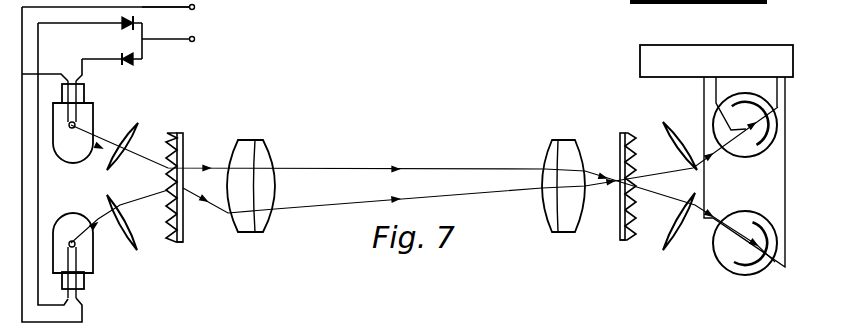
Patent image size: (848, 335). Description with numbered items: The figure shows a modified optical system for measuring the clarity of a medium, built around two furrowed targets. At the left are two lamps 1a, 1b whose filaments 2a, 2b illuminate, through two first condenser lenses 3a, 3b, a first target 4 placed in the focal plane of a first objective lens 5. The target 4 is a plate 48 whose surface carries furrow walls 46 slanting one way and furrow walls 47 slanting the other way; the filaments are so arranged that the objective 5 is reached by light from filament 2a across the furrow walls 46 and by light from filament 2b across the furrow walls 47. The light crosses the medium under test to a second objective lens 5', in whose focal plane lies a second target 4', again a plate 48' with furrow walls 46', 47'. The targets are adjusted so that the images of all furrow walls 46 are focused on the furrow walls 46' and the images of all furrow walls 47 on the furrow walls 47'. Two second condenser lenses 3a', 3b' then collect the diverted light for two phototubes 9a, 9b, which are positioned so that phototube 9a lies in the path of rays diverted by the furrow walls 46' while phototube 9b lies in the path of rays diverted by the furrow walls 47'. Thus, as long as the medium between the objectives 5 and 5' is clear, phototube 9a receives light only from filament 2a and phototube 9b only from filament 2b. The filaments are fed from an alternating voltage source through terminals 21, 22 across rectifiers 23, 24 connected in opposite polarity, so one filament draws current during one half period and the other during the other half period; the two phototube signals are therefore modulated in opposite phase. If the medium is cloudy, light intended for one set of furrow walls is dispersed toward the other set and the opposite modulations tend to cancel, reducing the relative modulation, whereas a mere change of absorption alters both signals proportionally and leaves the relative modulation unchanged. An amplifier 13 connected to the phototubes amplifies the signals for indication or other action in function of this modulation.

The lamp 1a is at (86, 122).
The filament 2a is at (78, 123).
The first condenser lens 3a is at (135, 141).
The lamp 1b is at (86, 255).
The filament 2b is at (78, 246).
The first condenser lens 3b is at (118, 225).
The first target 4 is at (172, 177).
The furrow walls 46 is at (157, 228).
The furrow walls 47 is at (154, 177).
The reticle plate 48 is at (194, 188).
The first objective lens 5 is at (252, 177).
The second objective lens 5' is at (558, 176).
The second target 4' is at (623, 182).
The furrow walls 46' is at (640, 225).
The furrow walls 47' is at (642, 177).
The receiving reticle plate 48' is at (605, 187).
The second condenser lens 3a' is at (679, 229).
The second condenser lens 3b' is at (680, 141).
The phototube 9a is at (760, 210).
The phototube 9b is at (758, 159).
The amplifier 13 is at (668, 80).
The alternating voltage source terminal 21 is at (196, 9).
The alternating voltage source terminal 22 is at (196, 41).
The rectifier 23 is at (133, 13).
The rectifier 24 is at (130, 68).